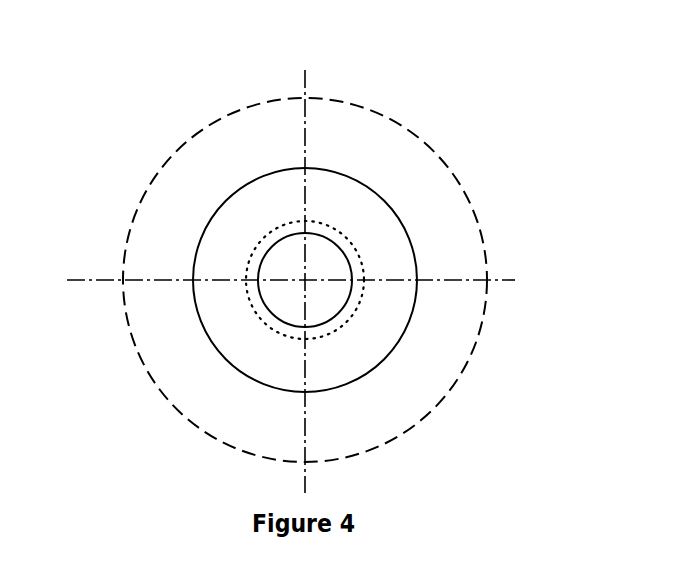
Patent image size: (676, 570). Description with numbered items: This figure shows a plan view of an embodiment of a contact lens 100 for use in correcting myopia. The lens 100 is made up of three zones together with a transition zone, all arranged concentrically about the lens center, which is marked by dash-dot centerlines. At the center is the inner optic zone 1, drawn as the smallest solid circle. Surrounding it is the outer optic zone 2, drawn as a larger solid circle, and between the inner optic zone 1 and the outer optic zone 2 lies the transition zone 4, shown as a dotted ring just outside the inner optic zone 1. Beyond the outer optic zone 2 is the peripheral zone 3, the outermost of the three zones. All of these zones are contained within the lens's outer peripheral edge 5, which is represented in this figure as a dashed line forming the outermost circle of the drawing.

The contact lens 100 is at (425, 92).
The inner optic zone 1 is at (305, 260).
The outer optic zone 2 is at (380, 211).
The peripheral zone 3 is at (447, 215).
The transition zone 4 is at (332, 322).
The outer peripheral edge 5 is at (405, 427).